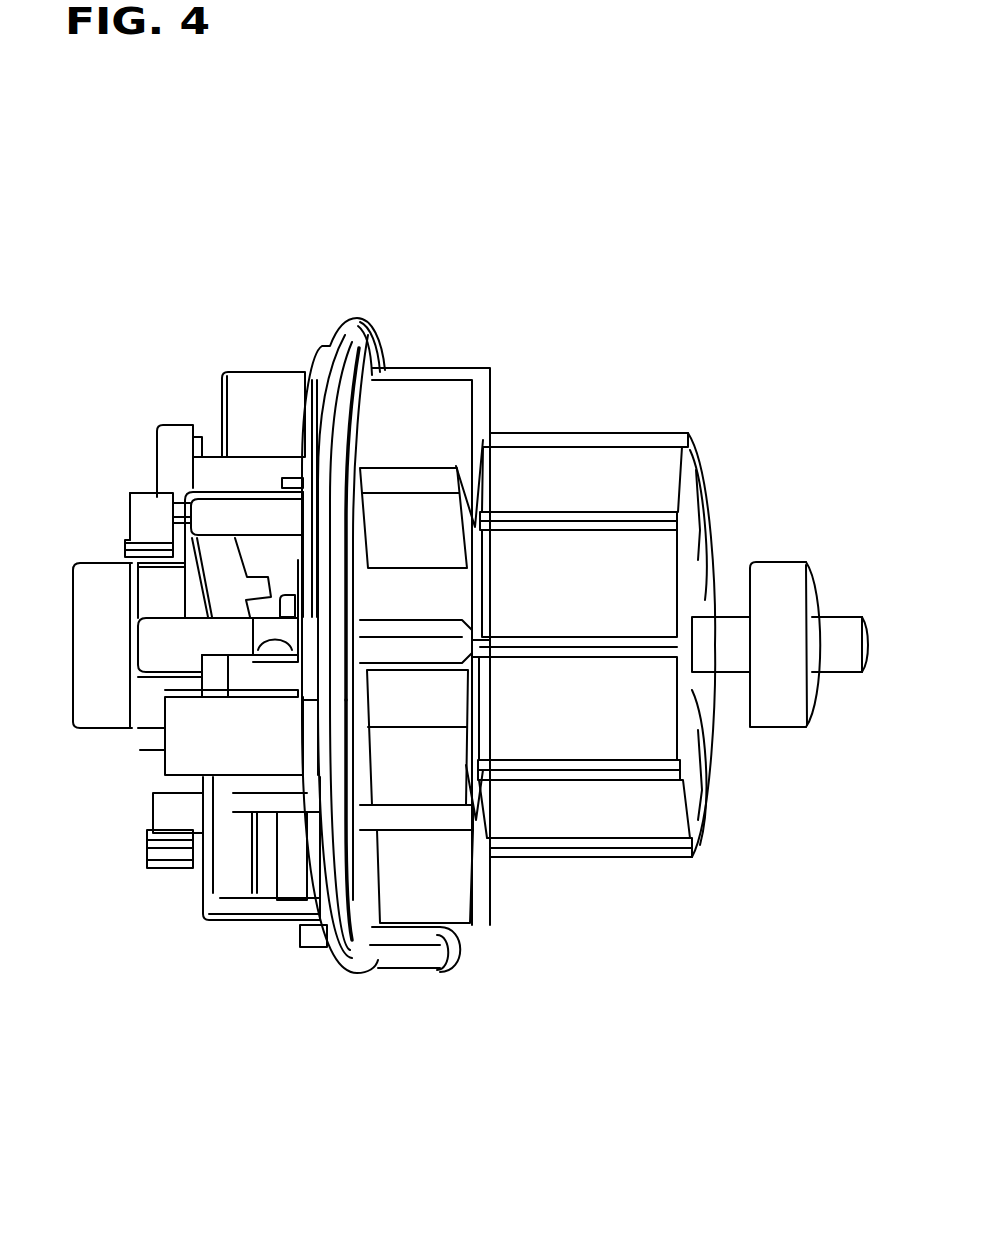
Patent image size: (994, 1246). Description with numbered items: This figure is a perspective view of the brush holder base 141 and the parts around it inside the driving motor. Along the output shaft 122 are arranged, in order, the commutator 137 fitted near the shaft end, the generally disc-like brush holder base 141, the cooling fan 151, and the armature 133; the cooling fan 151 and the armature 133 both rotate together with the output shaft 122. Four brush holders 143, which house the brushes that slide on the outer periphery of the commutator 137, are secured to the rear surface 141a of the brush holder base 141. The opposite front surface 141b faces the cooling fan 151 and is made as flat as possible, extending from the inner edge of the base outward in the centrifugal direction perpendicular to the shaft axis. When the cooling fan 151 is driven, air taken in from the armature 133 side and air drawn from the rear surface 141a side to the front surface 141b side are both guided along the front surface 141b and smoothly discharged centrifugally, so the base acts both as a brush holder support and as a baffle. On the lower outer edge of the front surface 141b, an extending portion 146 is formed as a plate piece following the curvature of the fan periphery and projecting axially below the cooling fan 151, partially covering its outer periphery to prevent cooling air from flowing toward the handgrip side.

The brush holder base 141 is at (362, 312).
The rear surface 141a is at (332, 340).
The front surface 141b is at (374, 352).
The brush holder 143 is at (218, 483).
The commutator 137 is at (133, 603).
The cooling fan 151 is at (495, 381).
The armature 133 is at (677, 432).
The output shaft 122 is at (720, 623).
The extending portion 146 is at (398, 957).